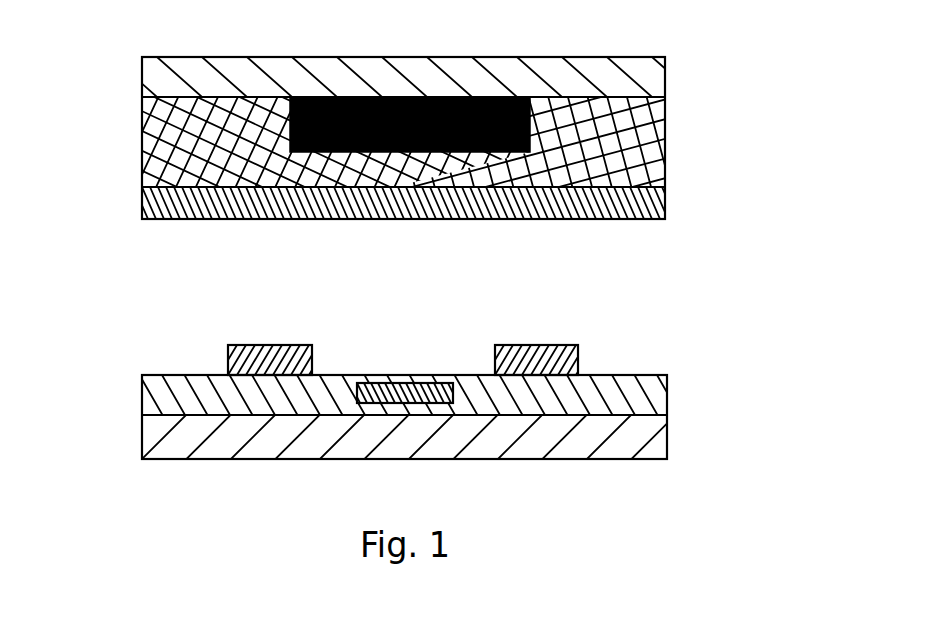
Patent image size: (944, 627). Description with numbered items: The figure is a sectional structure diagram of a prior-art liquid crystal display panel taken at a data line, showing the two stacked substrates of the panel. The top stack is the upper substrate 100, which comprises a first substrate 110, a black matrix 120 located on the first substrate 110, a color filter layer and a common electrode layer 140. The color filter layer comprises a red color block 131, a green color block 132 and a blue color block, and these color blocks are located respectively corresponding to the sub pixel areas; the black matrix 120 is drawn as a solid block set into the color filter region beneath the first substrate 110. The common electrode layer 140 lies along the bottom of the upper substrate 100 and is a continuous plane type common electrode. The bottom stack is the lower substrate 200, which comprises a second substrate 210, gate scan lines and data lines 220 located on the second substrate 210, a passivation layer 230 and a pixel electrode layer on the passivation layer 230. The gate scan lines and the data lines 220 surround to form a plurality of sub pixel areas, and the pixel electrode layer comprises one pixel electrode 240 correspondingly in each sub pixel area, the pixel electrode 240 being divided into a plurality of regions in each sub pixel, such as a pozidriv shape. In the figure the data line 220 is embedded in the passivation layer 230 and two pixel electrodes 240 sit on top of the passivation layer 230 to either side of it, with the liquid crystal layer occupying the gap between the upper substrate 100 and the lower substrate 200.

The upper substrate 100 is at (98, 59).
The first substrate 110 is at (600, 82).
The black matrix 120 is at (530, 127).
The red color block 131 is at (380, 175).
The green color block 132 is at (613, 145).
The common electrode layer 140 is at (608, 205).
The lower substrate 200 is at (98, 353).
The second substrate 210 is at (567, 442).
The data lines 220 is at (455, 395).
The passivation layer 230 is at (557, 402).
The pixel electrode 240 is at (578, 345).